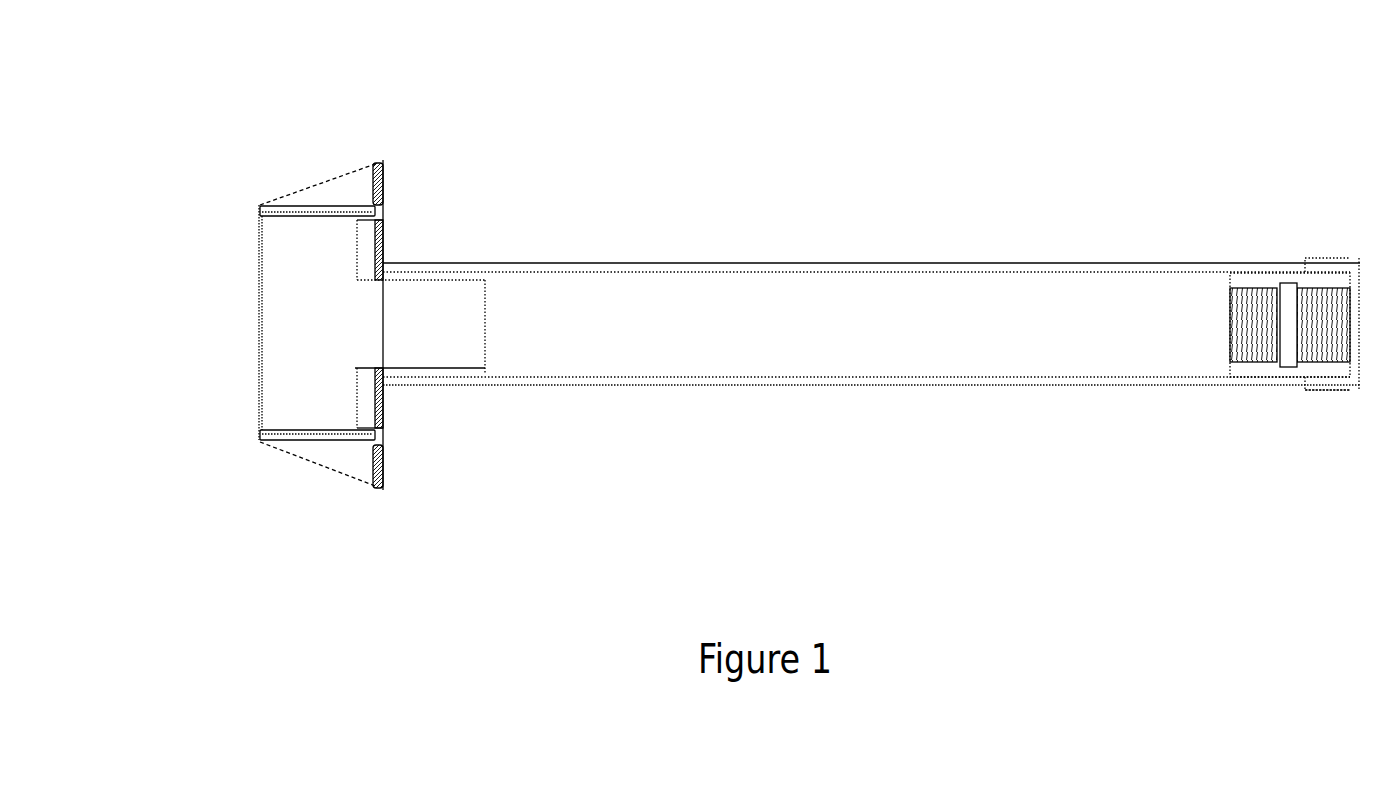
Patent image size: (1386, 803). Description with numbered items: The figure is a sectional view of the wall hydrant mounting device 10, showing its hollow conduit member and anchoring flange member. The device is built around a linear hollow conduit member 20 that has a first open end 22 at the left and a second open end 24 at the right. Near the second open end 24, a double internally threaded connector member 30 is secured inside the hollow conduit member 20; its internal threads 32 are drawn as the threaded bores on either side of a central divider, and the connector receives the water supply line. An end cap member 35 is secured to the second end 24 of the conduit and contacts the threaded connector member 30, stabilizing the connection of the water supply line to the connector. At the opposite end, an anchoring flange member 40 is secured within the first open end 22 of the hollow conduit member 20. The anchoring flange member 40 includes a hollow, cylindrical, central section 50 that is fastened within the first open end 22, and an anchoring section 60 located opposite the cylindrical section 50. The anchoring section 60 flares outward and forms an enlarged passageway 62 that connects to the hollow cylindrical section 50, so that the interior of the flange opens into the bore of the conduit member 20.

The wall hydrant mounting device 10 is at (950, 100).
The hollow conduit member 20 is at (745, 262).
The first end of hollow conduit member 22 is at (418, 262).
The second end of hollow conduit member 24 is at (1280, 260).
The double threaded connector member 30 is at (1247, 278).
The internal threads of connector member 32 is at (1292, 340).
The end cap member 35 is at (1328, 388).
The anchoring flange member 40 is at (297, 140).
The cylindrical section of anchoring flange member 50 is at (435, 368).
The anchoring section of anchoring flange member 60 is at (330, 472).
The enlarged passageway of anchoring flange member 62 is at (307, 308).